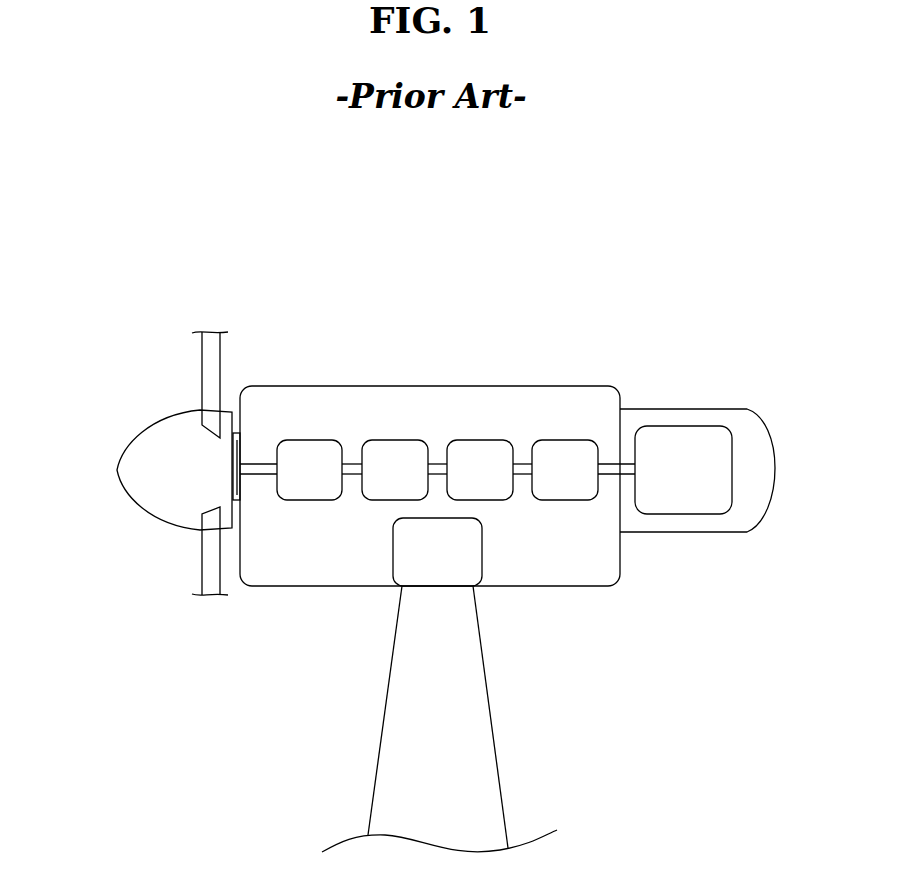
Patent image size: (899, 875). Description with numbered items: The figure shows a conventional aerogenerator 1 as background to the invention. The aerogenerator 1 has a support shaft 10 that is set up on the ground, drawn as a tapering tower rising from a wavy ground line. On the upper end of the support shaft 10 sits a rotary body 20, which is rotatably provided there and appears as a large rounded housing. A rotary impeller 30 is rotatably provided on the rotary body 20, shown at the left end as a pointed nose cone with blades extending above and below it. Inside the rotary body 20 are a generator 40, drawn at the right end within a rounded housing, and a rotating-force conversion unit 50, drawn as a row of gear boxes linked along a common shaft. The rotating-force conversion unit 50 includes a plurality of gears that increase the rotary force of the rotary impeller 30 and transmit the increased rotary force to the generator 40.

The aerogenerator 1 is at (340, 323).
The support shaft 10 is at (472, 718).
The rotary body 20 is at (566, 386).
The rotary impeller 30 is at (155, 405).
The generator 40 is at (682, 426).
The rotating-force conversion unit 50 is at (435, 422).